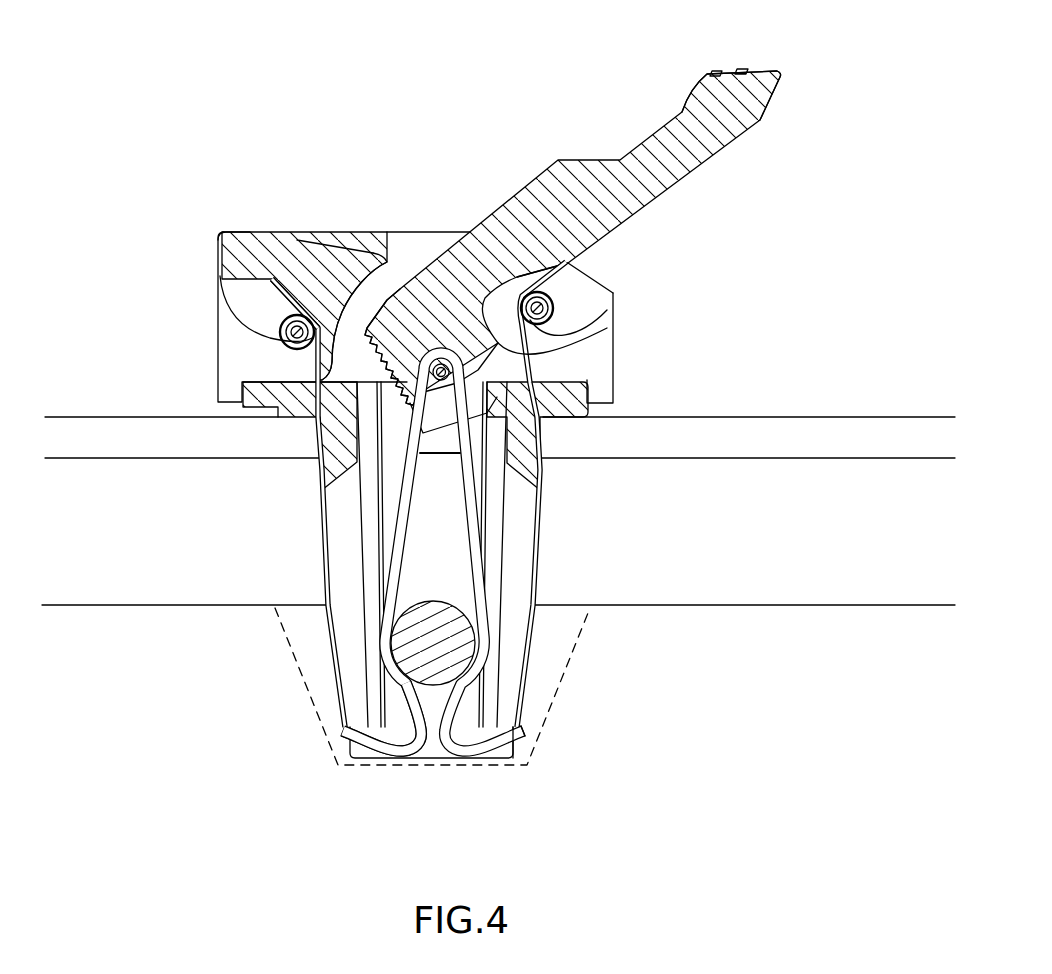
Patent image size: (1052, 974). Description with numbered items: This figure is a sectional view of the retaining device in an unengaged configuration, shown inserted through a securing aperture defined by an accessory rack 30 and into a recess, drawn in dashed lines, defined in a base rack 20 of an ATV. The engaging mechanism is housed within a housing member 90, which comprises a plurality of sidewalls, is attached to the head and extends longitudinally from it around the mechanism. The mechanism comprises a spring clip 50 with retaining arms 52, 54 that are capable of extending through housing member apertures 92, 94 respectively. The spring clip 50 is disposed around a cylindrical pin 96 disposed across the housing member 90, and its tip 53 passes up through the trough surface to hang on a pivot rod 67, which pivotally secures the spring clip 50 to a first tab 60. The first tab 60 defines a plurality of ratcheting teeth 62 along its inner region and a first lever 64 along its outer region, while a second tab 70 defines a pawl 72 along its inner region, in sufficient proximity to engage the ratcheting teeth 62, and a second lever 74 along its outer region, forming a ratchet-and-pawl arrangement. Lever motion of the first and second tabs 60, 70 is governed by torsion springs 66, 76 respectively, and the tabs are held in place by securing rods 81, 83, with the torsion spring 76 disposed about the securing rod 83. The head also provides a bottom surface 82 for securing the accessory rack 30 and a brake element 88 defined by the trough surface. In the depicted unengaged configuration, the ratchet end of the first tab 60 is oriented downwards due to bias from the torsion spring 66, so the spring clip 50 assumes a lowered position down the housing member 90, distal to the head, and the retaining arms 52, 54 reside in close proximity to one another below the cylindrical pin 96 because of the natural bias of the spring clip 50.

The base rack 20 is at (93, 586).
The accessory rack 30 is at (87, 437).
The spring clip 50 is at (478, 626).
The retaining arm 52 is at (340, 730).
The tip 53 is at (297, 240).
The retaining arm 54 is at (525, 732).
The first tab 60 is at (590, 160).
The ratcheting teeth 62 is at (405, 322).
The first lever 64 is at (666, 124).
The torsion spring 66 is at (583, 268).
The pivot rod 67 is at (447, 348).
The second tab 70 is at (283, 240).
The pawl 72 is at (382, 253).
The second lever 74 is at (237, 232).
The torsion spring 76 is at (277, 300).
The securing rod 81 is at (548, 292).
The bottom surface 82 is at (300, 420).
The securing rod 83 is at (280, 340).
The brake element 88 is at (598, 337).
The housing member 90 is at (548, 466).
The housing member aperture 92 is at (342, 618).
The housing member aperture 94 is at (520, 610).
The cylindrical pin 96 is at (383, 647).